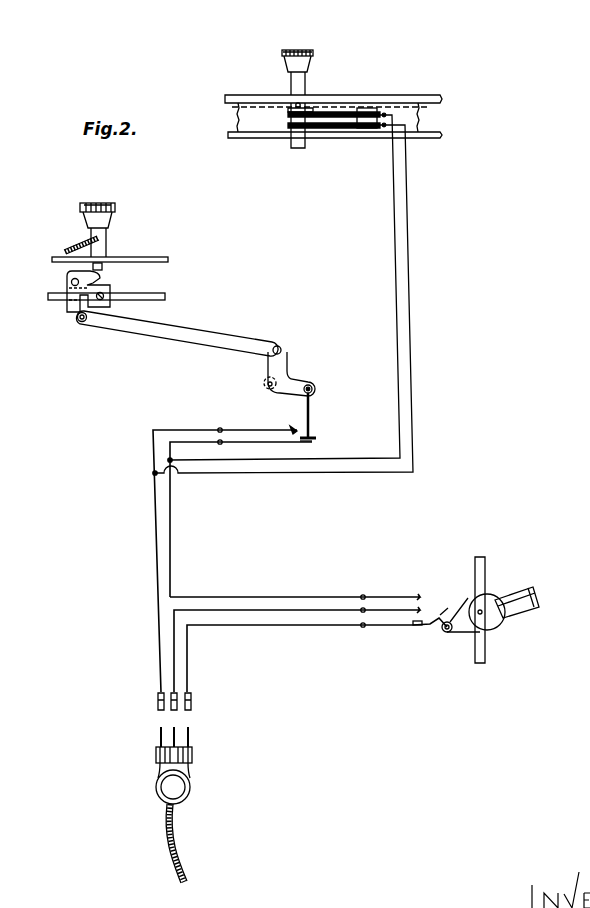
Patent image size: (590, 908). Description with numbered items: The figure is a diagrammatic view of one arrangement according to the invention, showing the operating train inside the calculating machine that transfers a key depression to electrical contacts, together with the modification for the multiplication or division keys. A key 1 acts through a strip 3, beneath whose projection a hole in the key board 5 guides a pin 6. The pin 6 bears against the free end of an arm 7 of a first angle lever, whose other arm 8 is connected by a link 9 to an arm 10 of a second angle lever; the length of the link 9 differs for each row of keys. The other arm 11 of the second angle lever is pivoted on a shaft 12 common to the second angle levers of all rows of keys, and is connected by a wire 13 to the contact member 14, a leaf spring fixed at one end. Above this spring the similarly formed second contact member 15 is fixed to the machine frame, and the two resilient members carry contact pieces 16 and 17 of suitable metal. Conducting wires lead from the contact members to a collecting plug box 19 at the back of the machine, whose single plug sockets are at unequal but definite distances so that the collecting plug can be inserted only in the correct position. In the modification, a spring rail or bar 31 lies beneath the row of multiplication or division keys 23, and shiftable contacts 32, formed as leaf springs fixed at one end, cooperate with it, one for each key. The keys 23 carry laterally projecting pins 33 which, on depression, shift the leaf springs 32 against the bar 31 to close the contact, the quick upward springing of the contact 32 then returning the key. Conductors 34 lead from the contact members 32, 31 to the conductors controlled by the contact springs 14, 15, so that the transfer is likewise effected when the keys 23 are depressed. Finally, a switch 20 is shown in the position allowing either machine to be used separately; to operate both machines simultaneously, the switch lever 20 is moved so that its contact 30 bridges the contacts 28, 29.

The push button 1 is at (98, 213).
The strip 3 is at (80, 243).
The key board 5 is at (145, 258).
The pin 6 is at (102, 265).
The arm of angle lever 7 is at (96, 277).
The arm of angle lever 8 is at (75, 310).
The link 9 is at (187, 330).
The arm of second angle lever 10 is at (268, 368).
The arm of second angle lever 11 is at (298, 382).
The shaft 12 is at (268, 388).
The wire 13 is at (310, 412).
The contact member 14 is at (272, 445).
The second contact member 15 is at (255, 428).
The contact piece 16 is at (297, 443).
The contact piece 17 is at (293, 425).
The collecting plug box 19 is at (189, 782).
The switch 20 is at (523, 588).
The multiplication or division key 23 is at (300, 53).
The contact 28 is at (388, 611).
The contact 29 is at (398, 595).
The contact 30 is at (433, 623).
The rail or bar 31 is at (343, 126).
The shiftable contact 32 is at (342, 116).
The pin 33 is at (300, 105).
The conductors 34 is at (410, 270).